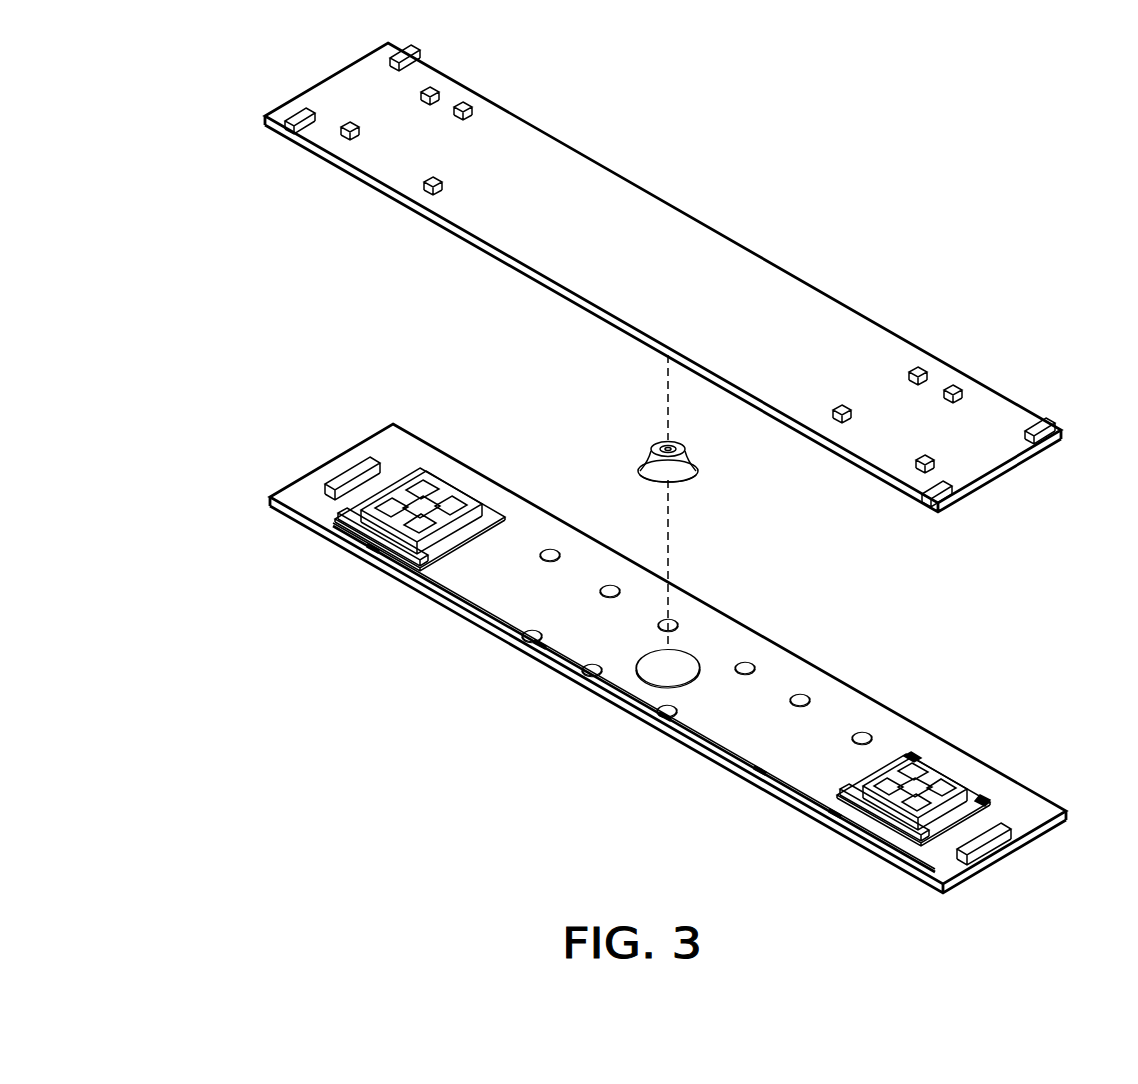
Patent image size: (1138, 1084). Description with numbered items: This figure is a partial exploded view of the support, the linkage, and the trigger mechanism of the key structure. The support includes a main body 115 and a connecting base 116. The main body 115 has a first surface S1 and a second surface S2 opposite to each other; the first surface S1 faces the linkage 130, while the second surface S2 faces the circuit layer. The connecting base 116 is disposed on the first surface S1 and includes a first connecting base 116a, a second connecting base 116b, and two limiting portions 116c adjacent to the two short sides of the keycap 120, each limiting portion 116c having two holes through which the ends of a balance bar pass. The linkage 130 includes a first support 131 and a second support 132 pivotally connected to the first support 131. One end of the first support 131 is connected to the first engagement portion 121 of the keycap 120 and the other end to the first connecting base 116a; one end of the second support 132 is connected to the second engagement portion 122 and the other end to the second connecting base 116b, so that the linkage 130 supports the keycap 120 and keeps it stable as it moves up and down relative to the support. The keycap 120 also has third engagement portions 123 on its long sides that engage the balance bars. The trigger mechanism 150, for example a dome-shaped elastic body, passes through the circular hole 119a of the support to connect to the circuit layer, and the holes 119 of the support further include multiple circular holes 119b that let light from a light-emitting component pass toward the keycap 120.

The keycap 120 is at (993, 452).
The first engagement portion 121 is at (912, 462).
The second engagement portion 122 is at (958, 392).
The third engagement portion 123 is at (420, 56).
The trigger mechanism 150 is at (645, 462).
The main body 115 is at (639, 658).
The first surface S1 is at (485, 577).
The second surface S2 is at (350, 555).
The opening 119 is at (500, 724).
The hole 119a is at (636, 677).
The hole 119b is at (552, 672).
The connecting base 116 is at (686, 664).
The first connecting base 116a is at (905, 763).
The second connecting base 116b is at (885, 838).
The limiting portion 116c is at (358, 477).
The linkage 130 is at (720, 707).
The first support 131 is at (840, 793).
The second support 132 is at (1003, 815).